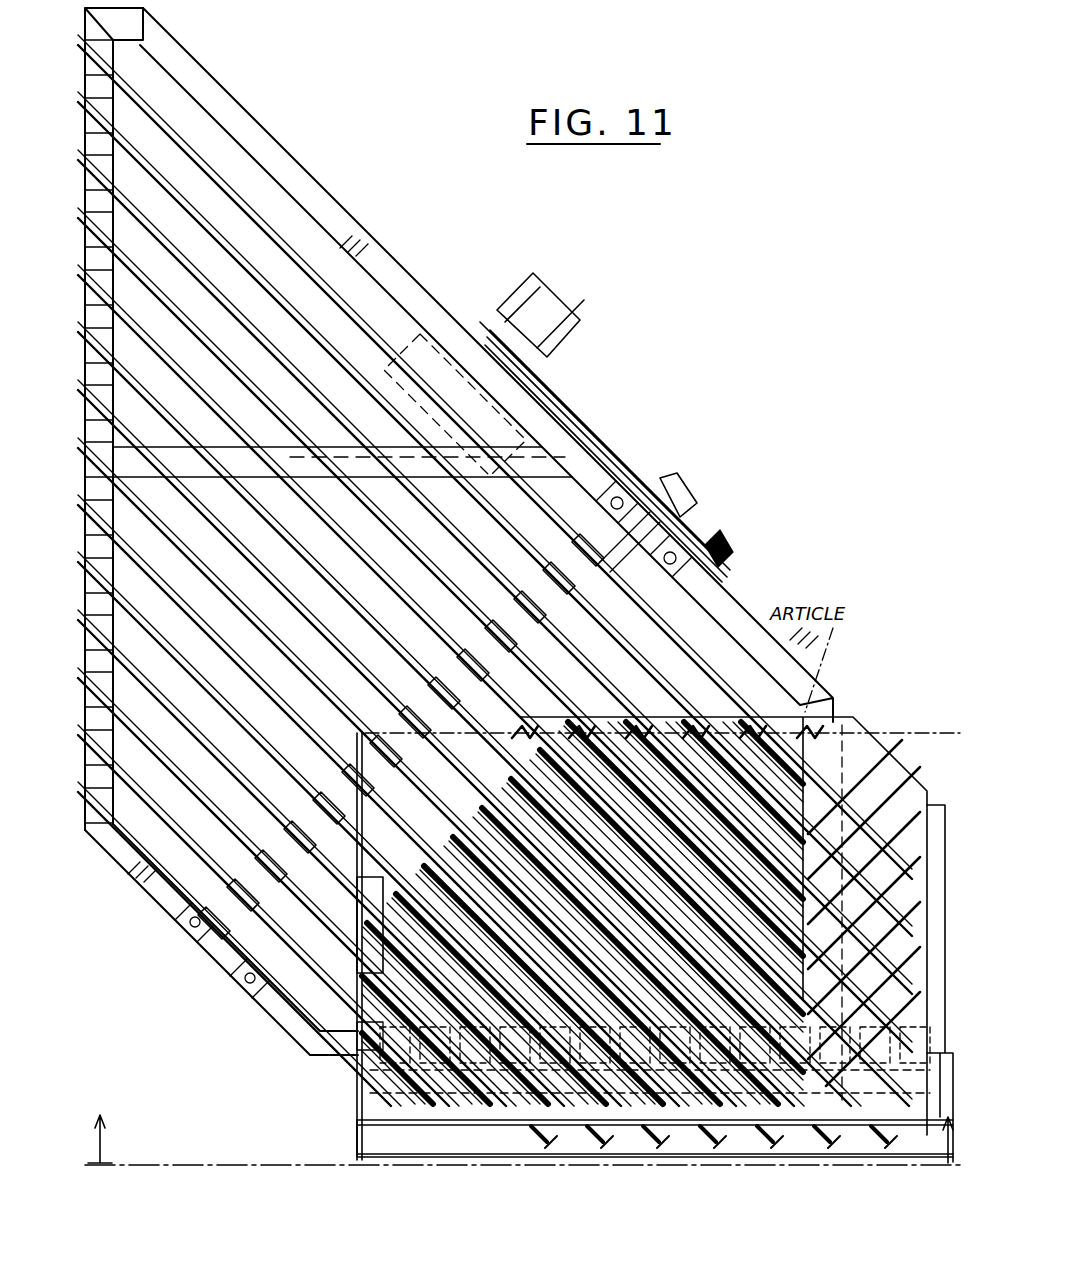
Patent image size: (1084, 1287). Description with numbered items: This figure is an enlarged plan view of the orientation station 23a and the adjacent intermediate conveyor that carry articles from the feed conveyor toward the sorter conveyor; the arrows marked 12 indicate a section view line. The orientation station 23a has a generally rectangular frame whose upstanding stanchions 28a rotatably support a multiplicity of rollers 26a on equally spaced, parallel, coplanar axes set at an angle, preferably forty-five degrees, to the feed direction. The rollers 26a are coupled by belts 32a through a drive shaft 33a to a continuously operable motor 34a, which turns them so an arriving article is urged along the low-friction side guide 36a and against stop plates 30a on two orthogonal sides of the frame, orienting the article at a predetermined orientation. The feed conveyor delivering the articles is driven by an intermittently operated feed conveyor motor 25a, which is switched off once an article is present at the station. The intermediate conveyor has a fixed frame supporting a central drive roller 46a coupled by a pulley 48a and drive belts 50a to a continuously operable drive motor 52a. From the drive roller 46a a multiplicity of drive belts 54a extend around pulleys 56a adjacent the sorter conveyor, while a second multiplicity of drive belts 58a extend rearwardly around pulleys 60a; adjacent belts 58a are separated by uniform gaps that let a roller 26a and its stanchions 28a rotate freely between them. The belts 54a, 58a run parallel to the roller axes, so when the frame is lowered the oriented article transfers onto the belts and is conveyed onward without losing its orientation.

The section line 12 is at (522, 1143).
The orientation station 23a is at (809, 498).
The feed conveyor motor 25a is at (368, 1135).
The rollers 26a is at (512, 1110).
The stanchions 28a is at (676, 1146).
The stop plates 30a is at (357, 1008).
The belts 32a is at (878, 860).
The drive shaft 33a is at (418, 1095).
The motor 34a is at (850, 1150).
The low friction side guide 36a is at (420, 1110).
The central drive roller 46a is at (612, 578).
The pulley 48a is at (703, 533).
The drive belts 50a is at (603, 428).
The drive motor 52a is at (548, 360).
The drive belts 54a is at (170, 180).
The pulleys 56a is at (110, 62).
The drive belts 58a is at (637, 688).
The pulleys 60a is at (860, 777).